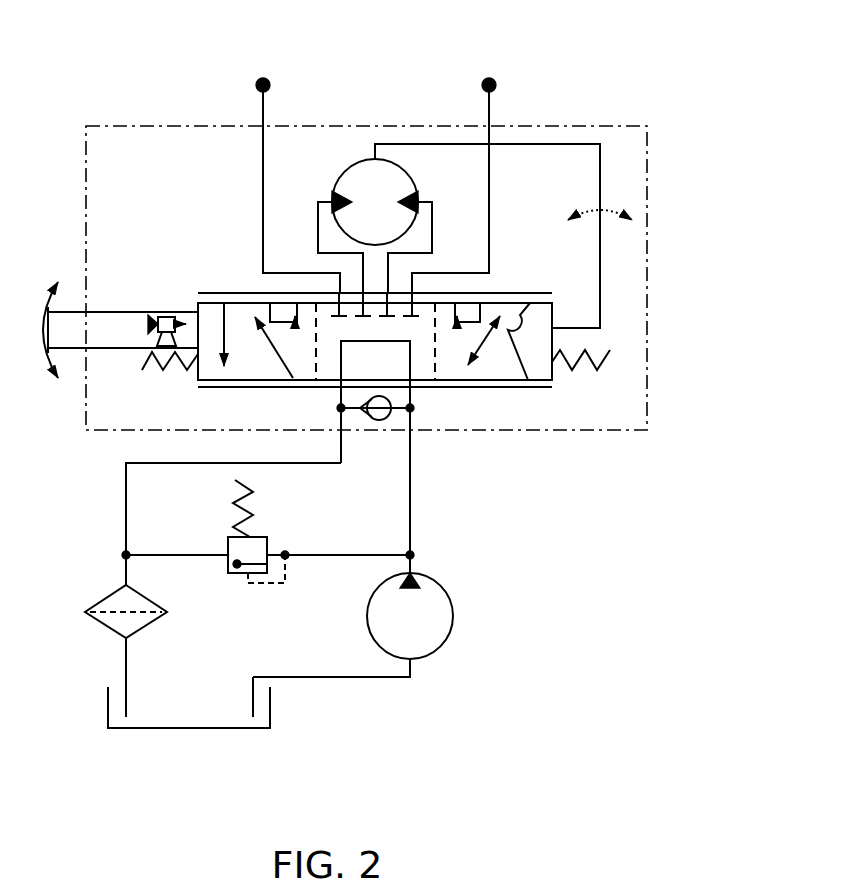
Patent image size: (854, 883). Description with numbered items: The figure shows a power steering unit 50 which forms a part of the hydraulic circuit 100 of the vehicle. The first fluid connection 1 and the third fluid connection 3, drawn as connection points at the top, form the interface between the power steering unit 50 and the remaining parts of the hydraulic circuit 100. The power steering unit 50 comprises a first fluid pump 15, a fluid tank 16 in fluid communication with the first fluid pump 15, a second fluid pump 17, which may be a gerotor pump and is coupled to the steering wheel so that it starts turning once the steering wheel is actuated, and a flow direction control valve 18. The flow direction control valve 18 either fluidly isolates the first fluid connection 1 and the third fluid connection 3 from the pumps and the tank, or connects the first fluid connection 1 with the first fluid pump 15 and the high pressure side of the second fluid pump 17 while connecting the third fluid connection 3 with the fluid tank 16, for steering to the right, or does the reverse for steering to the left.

The first fluid connection 1 is at (489, 78).
The third fluid connection 3 is at (263, 78).
The first fluid pump 15 is at (470, 601).
The fluid tank 16 is at (178, 728).
The second fluid pump 17 is at (318, 185).
The flow direction control valve 18 is at (472, 402).
The power steering unit 50 is at (635, 637).
The hydraulic circuit 100 is at (672, 520).